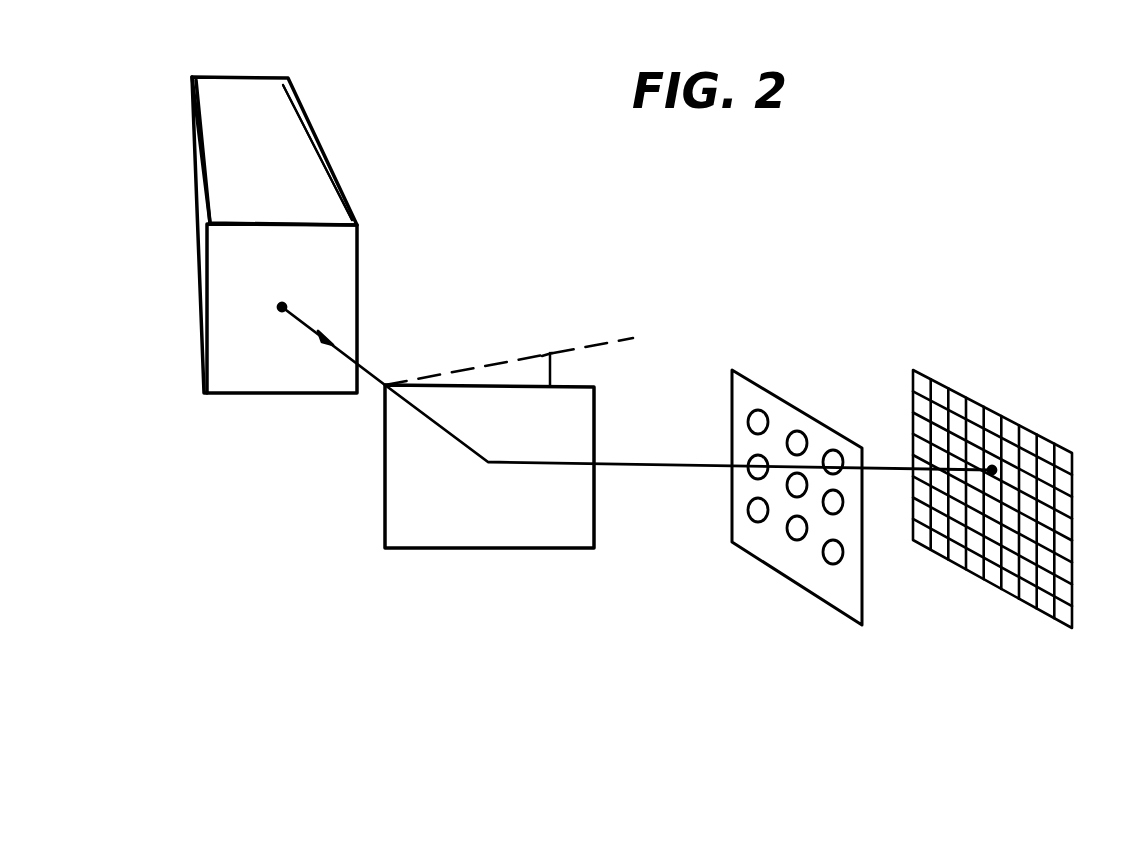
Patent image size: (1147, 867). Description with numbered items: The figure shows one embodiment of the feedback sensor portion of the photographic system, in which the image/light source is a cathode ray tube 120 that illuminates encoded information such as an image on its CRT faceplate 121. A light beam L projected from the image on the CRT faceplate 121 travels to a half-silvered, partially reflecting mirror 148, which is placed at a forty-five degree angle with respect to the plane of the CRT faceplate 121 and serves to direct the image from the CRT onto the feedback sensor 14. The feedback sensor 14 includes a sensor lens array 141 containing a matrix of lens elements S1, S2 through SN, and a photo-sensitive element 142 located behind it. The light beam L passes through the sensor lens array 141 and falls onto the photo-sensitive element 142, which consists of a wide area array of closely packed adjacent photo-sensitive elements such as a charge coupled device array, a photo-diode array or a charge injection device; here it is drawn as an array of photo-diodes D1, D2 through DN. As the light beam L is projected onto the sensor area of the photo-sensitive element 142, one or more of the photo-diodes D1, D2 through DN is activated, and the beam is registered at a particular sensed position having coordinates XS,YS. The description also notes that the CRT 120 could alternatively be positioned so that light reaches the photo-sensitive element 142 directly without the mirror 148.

The cathode ray tube 120 is at (280, 148).
The CRT faceplate 121 is at (313, 223).
The light beam L is at (635, 386).
The half-silvered mirror 148 is at (402, 484).
The feedback sensor 14 is at (922, 498).
The sensor lens array 141 is at (797, 472).
The lens element S1 is at (762, 418).
The lens element S2 is at (798, 440).
The lens element SN is at (828, 558).
The photo-sensitive element 142 is at (1018, 466).
The photo-diode D1 is at (925, 380).
The photo-diode D2 is at (942, 387).
The photo-diode DN is at (1062, 615).
The sensed position coordinates XS,YS is at (992, 470).